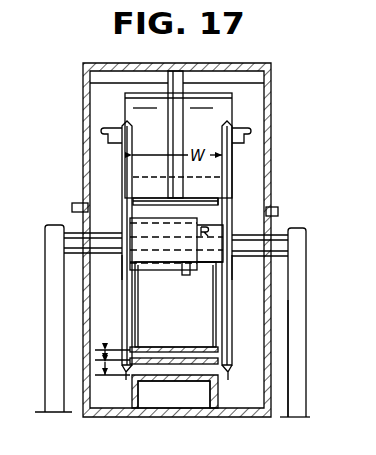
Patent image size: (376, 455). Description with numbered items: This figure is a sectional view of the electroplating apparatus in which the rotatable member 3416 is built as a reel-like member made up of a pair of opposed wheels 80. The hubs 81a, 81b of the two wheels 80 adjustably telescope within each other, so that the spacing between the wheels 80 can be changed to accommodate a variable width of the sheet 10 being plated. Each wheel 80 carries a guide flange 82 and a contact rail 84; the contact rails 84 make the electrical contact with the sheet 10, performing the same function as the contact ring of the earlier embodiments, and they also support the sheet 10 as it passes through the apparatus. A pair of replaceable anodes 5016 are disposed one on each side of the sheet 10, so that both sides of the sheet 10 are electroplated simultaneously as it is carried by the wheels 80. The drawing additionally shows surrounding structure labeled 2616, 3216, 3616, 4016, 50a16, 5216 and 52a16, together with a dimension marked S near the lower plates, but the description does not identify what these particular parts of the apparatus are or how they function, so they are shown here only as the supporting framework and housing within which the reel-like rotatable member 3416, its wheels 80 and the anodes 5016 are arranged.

The frame 2616 is at (111, 410).
The top plate 52a16 is at (100, 80).
The cylinder housing 4016 is at (228, 99).
The guide flange 82 is at (121, 343).
The rotatable member 3416 is at (233, 167).
The hub 81b is at (148, 218).
The hub 81a is at (217, 218).
The sheet 10 is at (188, 362).
The upper plate 50a16 is at (140, 348).
The spacing S is at (103, 368).
The channel member 5216 is at (206, 390).
The replaceable anodes 5016 is at (162, 385).
The contact rail 84 is at (127, 372).
The wheels 80 is at (120, 272).
The cross member 3616 is at (273, 235).
The support post 3216 is at (257, 405).